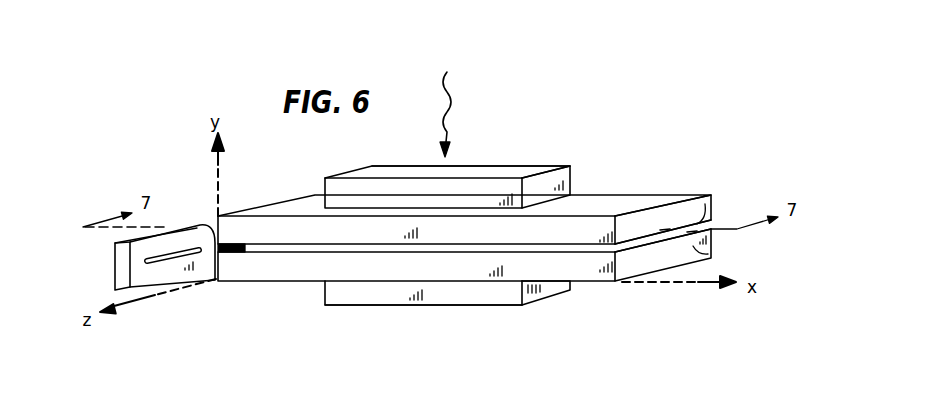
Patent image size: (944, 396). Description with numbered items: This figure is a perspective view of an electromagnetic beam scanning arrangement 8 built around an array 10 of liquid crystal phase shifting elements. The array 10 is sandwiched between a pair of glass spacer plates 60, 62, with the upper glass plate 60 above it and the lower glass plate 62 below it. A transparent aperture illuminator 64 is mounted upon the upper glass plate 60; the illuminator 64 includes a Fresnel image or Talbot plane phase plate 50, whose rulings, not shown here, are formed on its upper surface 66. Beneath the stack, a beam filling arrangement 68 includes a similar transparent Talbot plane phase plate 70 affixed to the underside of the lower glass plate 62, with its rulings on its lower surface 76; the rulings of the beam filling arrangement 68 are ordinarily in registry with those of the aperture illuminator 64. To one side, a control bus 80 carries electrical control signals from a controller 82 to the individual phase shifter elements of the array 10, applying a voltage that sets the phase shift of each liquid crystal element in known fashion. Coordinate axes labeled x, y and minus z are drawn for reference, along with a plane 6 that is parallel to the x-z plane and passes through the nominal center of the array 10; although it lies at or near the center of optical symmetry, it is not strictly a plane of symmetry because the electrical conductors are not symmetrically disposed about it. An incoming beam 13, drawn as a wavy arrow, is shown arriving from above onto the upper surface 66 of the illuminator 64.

The plane 6 is at (257, 250).
The beam scanning arrangement 8 is at (635, 135).
The array of liquid crystal phase shifting elements 10 is at (705, 206).
The incident light beam 13 is at (447, 84).
The Talbot plane phase plate 50 is at (573, 170).
The glass spacer plate 60 is at (697, 195).
The glass spacer plate 62 is at (711, 257).
The aperture illuminator 64 is at (549, 142).
The upper surface 66 is at (477, 170).
The beam filling arrangement 68 is at (361, 322).
The Talbot plane phase plate 70 is at (542, 290).
The lower surface 76 is at (470, 306).
The control bus 80 is at (175, 260).
The controller 82 is at (153, 275).